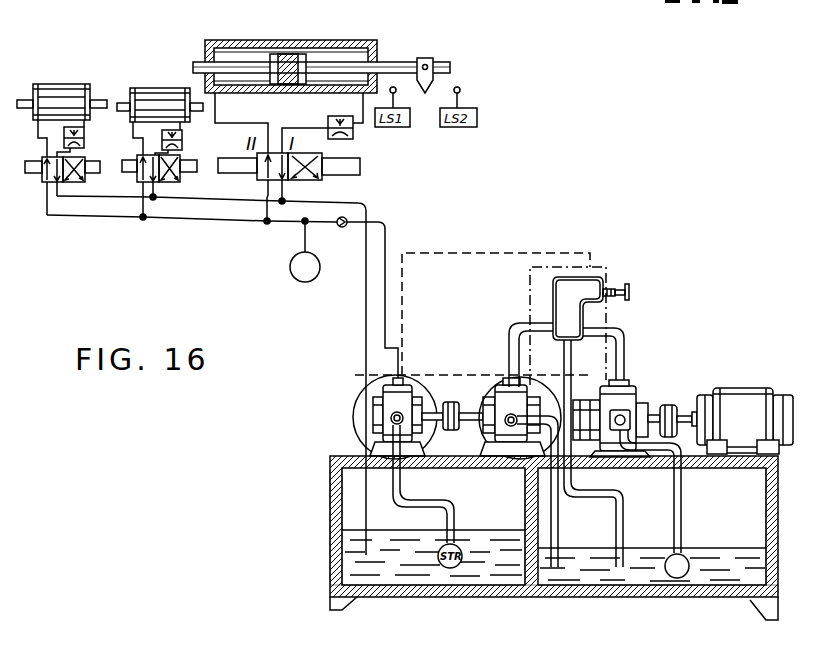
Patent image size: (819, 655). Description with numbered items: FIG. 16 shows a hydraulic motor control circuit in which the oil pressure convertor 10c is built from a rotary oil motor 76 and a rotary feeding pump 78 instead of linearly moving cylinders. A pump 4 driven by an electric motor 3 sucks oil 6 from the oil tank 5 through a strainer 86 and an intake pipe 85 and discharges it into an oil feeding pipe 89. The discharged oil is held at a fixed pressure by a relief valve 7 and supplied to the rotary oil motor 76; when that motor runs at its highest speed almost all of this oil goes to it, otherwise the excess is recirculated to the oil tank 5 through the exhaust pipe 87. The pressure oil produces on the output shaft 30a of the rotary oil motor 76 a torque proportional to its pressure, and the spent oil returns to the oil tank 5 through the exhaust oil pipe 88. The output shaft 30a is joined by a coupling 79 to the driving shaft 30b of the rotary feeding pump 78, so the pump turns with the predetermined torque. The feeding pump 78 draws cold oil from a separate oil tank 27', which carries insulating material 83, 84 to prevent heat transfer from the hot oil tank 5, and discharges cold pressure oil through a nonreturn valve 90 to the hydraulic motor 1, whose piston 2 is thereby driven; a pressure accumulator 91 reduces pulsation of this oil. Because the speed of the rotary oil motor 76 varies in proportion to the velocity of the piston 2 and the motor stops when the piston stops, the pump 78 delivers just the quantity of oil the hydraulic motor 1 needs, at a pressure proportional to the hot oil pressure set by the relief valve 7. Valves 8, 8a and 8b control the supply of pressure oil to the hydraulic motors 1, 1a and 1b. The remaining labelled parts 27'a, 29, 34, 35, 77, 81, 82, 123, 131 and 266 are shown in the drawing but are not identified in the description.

The hydraulic motor 1 is at (326, 40).
The hydraulic motor 1a is at (153, 92).
The hydraulic motor 1b is at (56, 92).
The piston 2 is at (287, 54).
The electric motor 3 is at (757, 403).
The pump 4 is at (631, 400).
The oil tank 5 is at (780, 495).
The oil 6 is at (757, 575).
The relief valve 7 is at (578, 283).
The valve 8 is at (350, 177).
The valve 8a is at (187, 177).
The valve 8b is at (85, 177).
The oil pressure convertor 10c is at (477, 394).
The oil tank 27' is at (312, 523).
The reservoir compartment 27'a is at (402, 554).
The pressure conduit 29 is at (246, 204).
The output shaft 30a is at (468, 408).
The driving shaft 30b is at (433, 405).
The pressure switch 34 is at (84, 143).
The return conduit 35 is at (173, 223).
The rotary oil motor 76 is at (521, 387).
The housing outline 77 is at (532, 265).
The rotary feeding pump 78 is at (378, 394).
The coupling 79 is at (452, 401).
The base plate 81 is at (634, 610).
The partition wall 82 is at (527, 548).
The insulating material 83 is at (769, 537).
The insulating material 84 is at (334, 514).
The intake pipe 85 is at (683, 491).
The strainer 86 is at (688, 556).
The exhaust pipe 87 is at (625, 523).
The exhaust oil pipe 88 is at (559, 523).
The oil feeding pipe 89 is at (626, 337).
The nonreturn valve 90 is at (338, 228).
The pressure accumulator 91 is at (300, 281).
The conduit 123 is at (543, 319).
The power unit enclosure 131 is at (475, 253).
The coupling 266 is at (675, 406).